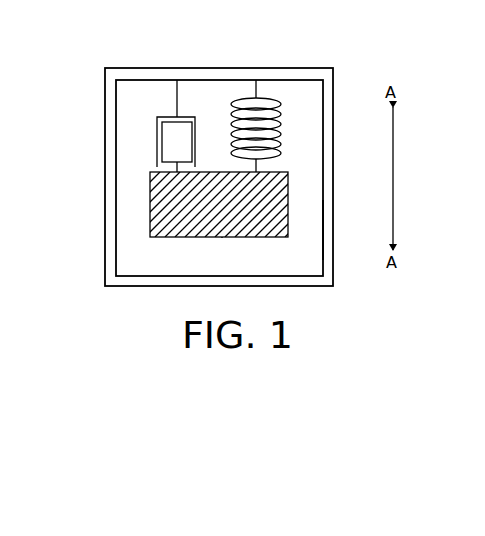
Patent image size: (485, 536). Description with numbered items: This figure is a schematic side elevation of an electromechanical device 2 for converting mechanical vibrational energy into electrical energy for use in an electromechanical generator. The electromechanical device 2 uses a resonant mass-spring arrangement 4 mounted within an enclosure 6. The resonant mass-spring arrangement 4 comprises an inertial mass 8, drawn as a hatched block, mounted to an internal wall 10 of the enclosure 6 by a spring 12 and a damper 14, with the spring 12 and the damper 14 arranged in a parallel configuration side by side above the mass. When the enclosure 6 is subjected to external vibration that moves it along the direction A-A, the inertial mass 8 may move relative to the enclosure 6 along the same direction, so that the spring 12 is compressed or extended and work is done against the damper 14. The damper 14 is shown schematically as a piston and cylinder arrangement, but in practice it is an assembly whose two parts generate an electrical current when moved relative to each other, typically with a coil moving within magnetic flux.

The electromechanical device 2 is at (298, 52).
The resonant mass-spring arrangement 4 is at (222, 237).
The enclosure 6 is at (333, 177).
The inertial mass 8 is at (150, 188).
The internal wall 10 is at (323, 231).
The spring 12 is at (282, 117).
The damper 14 is at (157, 145).